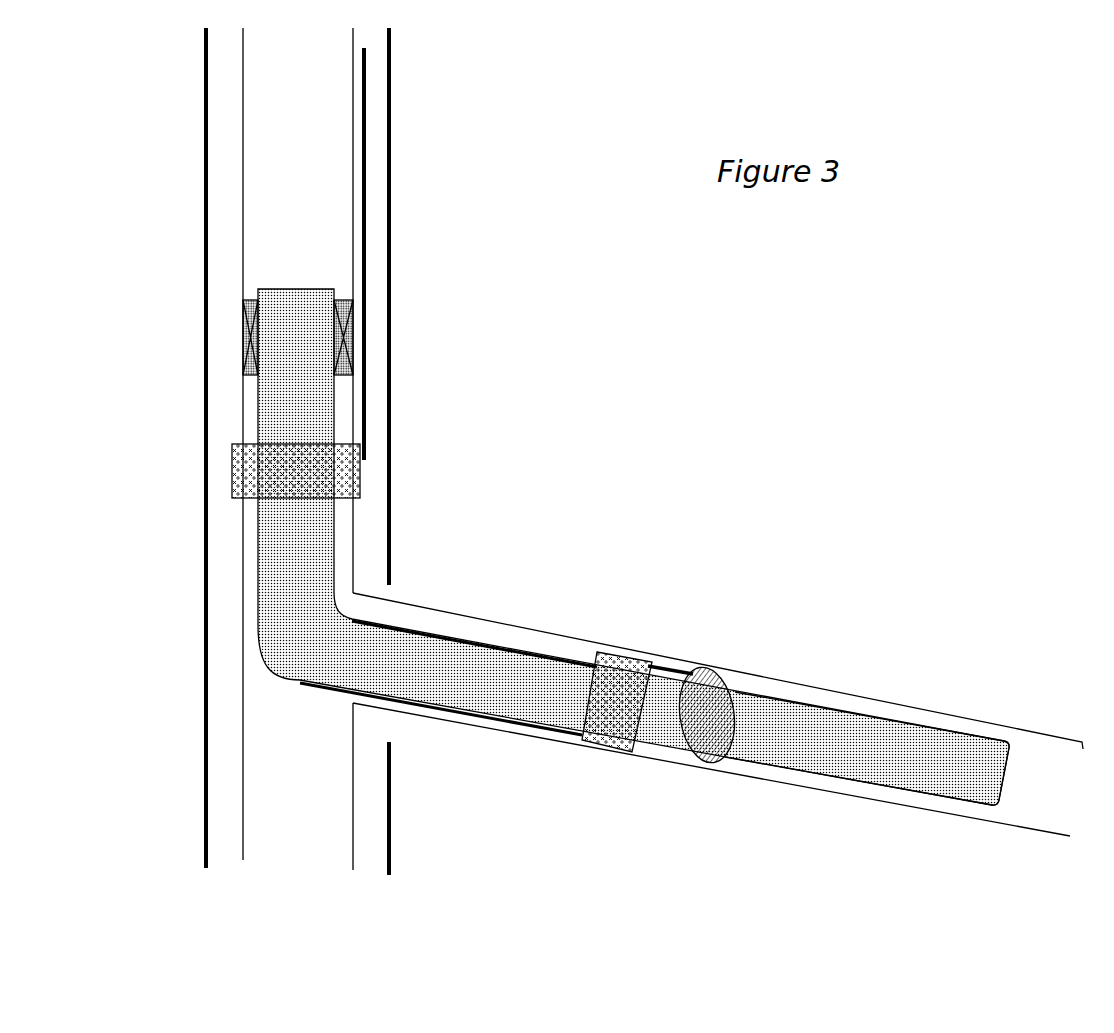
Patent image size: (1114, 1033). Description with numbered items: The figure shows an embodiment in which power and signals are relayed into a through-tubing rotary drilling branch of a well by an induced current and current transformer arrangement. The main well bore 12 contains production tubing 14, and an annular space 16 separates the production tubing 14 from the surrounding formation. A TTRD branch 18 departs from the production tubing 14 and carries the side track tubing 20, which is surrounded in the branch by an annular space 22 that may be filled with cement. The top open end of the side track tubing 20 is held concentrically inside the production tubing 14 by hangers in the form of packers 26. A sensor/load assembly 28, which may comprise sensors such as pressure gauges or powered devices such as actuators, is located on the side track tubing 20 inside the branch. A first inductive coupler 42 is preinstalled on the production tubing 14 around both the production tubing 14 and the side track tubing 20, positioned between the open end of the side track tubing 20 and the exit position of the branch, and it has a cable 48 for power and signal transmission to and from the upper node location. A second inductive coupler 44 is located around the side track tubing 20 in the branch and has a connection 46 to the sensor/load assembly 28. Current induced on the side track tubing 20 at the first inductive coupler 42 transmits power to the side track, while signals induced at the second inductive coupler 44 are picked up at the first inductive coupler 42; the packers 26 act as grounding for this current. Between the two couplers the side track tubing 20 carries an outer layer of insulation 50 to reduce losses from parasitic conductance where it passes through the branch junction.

The main well bore 12 is at (208, 770).
The production tubing 14 is at (243, 250).
The annular space 16 is at (215, 603).
The TTRD branch 18 is at (868, 700).
The side track tubing 20 is at (895, 787).
The annular space 22 is at (790, 783).
The packers 26 is at (355, 340).
The sensor/load assembly 28 is at (697, 767).
The first inductive coupler 42 is at (232, 468).
The second inductive coupler 44 is at (610, 652).
The connection 46 is at (672, 668).
The cable 48 is at (389, 266).
The insulation 50 is at (471, 714).